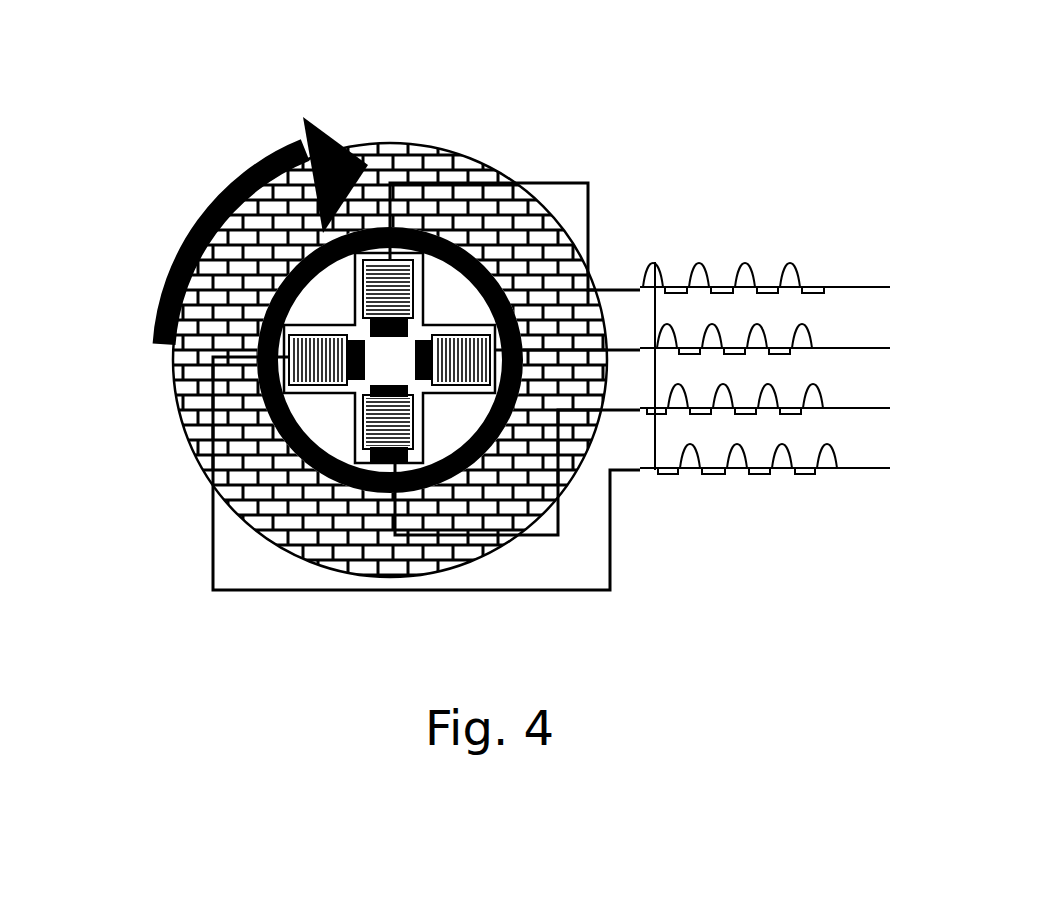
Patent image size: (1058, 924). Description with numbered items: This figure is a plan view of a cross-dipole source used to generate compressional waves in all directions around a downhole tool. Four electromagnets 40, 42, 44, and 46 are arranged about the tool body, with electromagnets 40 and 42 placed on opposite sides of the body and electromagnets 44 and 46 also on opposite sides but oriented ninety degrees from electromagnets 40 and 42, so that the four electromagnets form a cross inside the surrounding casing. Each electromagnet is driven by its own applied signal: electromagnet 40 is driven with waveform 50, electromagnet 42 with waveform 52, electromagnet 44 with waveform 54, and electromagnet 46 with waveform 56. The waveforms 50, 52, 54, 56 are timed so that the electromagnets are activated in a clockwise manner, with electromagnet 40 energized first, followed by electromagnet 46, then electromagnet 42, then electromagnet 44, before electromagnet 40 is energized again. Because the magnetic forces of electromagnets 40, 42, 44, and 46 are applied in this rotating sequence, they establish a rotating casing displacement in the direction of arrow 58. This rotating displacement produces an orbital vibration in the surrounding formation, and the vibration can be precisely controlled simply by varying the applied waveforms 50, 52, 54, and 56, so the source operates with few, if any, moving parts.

The electromagnet 40 is at (417, 282).
The electromagnet 42 is at (362, 457).
The electromagnet 44 is at (300, 390).
The electromagnet 46 is at (478, 415).
The waveform 50 is at (798, 277).
The waveform 52 is at (827, 398).
The waveform 54 is at (847, 455).
The waveform 56 is at (808, 337).
The arrow 58 is at (270, 175).